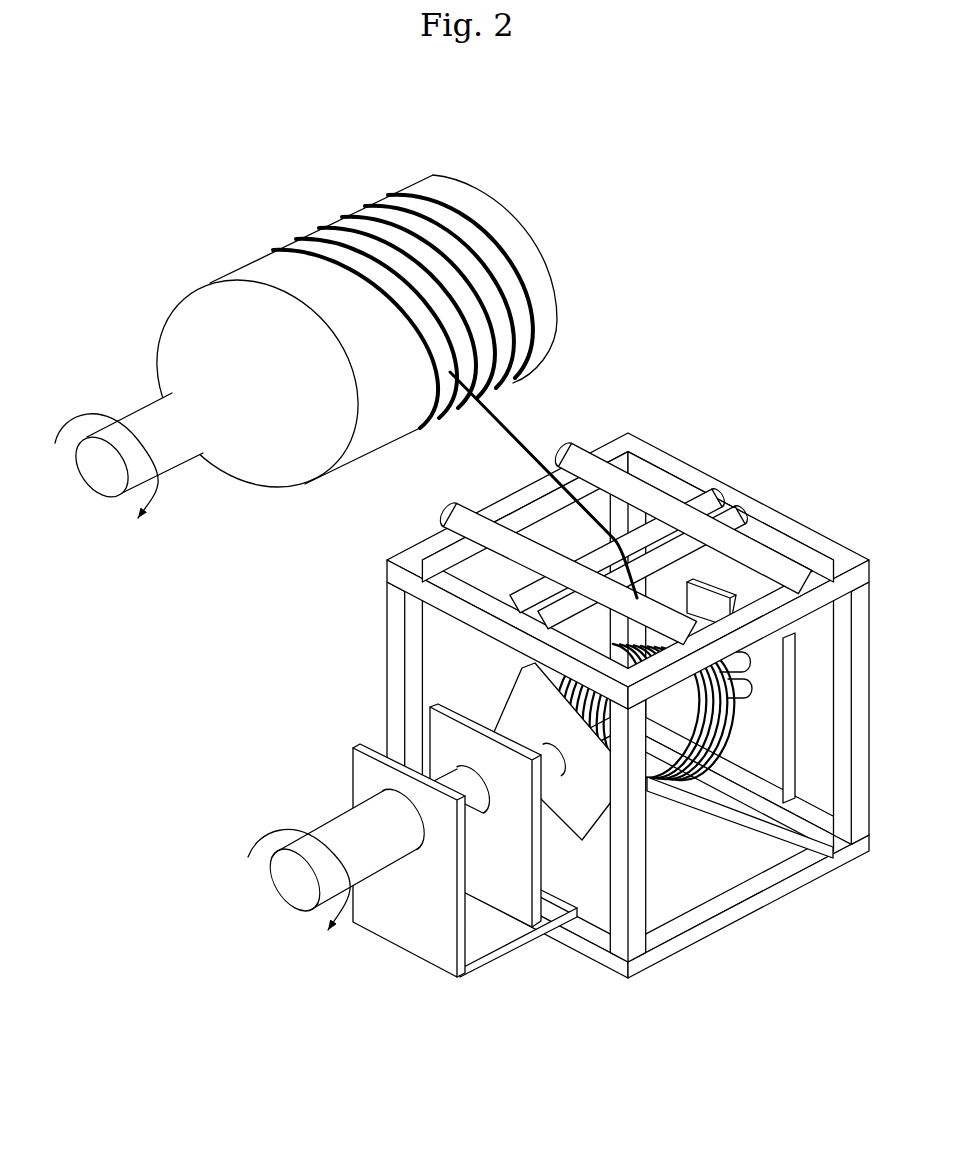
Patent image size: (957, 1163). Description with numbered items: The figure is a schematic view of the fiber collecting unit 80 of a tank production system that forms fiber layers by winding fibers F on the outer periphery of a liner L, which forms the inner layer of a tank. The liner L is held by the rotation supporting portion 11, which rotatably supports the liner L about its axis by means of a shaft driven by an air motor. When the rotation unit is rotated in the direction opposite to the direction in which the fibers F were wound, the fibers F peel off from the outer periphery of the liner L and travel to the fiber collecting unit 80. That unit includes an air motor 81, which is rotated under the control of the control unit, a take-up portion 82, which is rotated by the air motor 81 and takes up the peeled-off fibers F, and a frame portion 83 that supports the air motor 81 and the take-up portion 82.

The rotation supporting portion 11 is at (306, 363).
The liner L is at (253, 270).
The fibers F is at (513, 430).
The fiber collecting unit 80 is at (558, 664).
The air motor 81 is at (335, 832).
The take-up portion 82 is at (657, 784).
The frame portion 83 is at (792, 527).